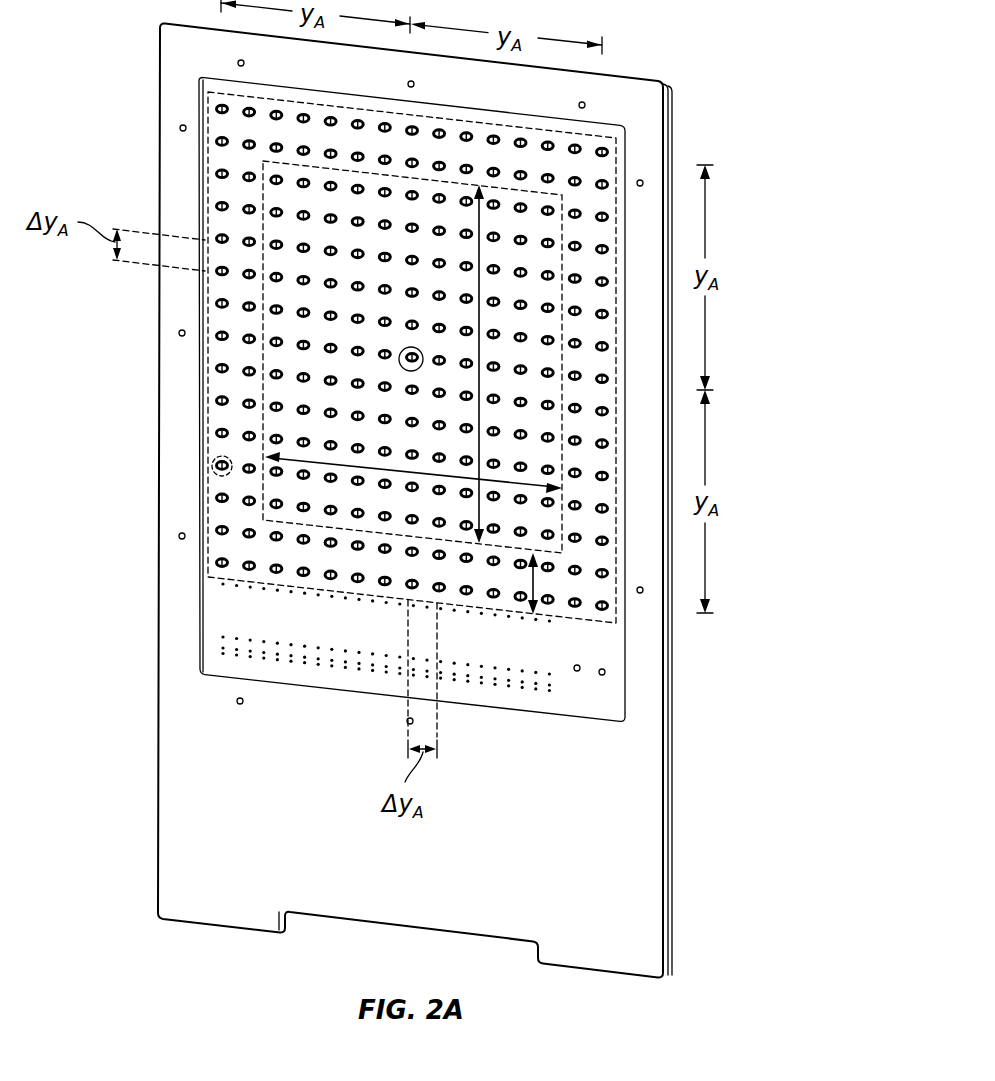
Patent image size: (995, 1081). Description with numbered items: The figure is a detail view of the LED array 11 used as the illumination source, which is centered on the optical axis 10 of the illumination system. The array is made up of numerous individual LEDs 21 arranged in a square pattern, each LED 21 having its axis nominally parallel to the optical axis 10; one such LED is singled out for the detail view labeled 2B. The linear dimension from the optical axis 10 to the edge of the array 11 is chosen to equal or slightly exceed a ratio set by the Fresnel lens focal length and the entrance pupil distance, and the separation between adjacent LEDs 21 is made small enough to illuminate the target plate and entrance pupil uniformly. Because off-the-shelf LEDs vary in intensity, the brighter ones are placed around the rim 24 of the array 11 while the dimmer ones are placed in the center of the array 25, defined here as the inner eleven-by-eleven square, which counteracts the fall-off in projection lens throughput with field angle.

The LED array 11 is at (750, 1020).
The LED 21 is at (222, 109).
The optical axis 10 is at (400, 361).
The detail view region 2B is at (212, 468).
The center of the array 25 is at (479, 383).
The rim of the array 24 is at (533, 583).